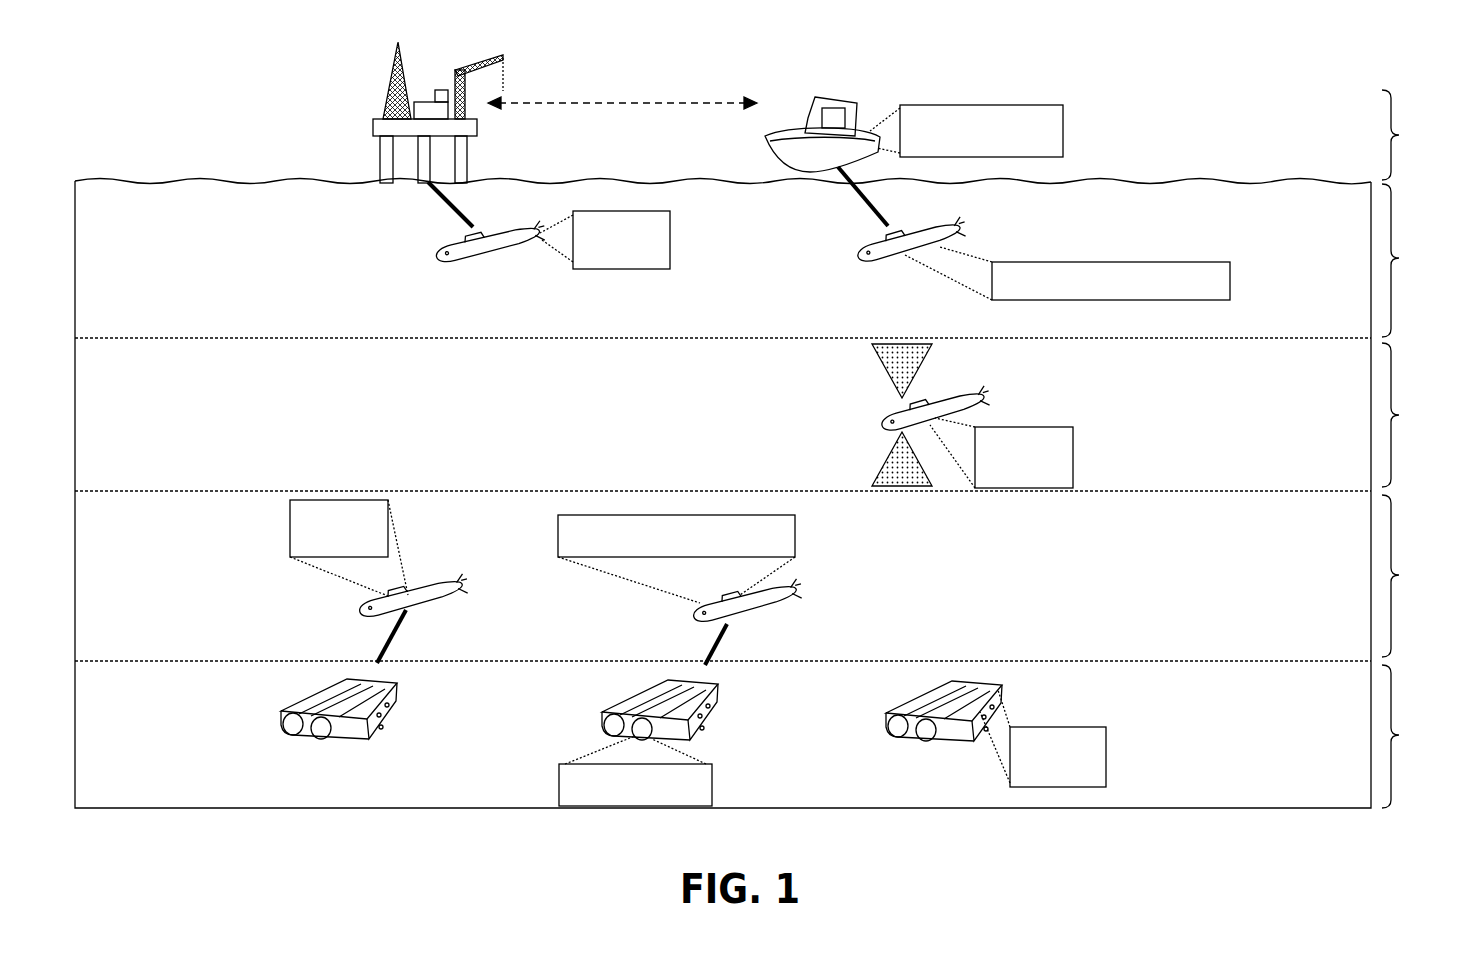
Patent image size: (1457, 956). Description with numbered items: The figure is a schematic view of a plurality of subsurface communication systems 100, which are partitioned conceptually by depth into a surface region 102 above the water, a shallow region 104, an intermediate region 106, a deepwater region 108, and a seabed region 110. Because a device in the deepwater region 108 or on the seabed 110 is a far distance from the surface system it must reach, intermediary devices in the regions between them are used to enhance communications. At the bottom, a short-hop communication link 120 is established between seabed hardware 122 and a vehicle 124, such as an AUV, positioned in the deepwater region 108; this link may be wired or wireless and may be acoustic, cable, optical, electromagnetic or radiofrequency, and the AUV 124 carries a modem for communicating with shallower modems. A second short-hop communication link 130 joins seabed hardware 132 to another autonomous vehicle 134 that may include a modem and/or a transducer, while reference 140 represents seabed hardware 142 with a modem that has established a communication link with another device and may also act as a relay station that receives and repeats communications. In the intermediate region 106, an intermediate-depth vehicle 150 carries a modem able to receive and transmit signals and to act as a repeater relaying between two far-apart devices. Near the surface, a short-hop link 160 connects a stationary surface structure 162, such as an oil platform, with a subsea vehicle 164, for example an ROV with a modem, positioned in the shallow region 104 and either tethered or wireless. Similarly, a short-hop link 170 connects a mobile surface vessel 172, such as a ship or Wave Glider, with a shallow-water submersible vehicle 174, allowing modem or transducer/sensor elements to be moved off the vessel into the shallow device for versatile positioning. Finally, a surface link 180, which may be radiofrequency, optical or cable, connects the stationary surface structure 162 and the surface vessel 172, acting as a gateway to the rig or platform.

The subsurface communication systems 100 is at (984, 40).
The surface region 102 is at (1330, 135).
The shallow region 104 is at (1330, 260).
The intermediate region 106 is at (1330, 415).
The deepwater region 108 is at (1330, 576).
The seabed region 110 is at (1330, 736).
The short-hop communication link 120 is at (418, 680).
The seabed hardware 122 is at (282, 718).
The vehicle 124 is at (368, 605).
The short-hop communication link 130 is at (740, 692).
The seabed hardware 132 is at (598, 712).
The vehicle 134 is at (785, 583).
The seabed hardware communication link 140 is at (1025, 686).
The seabed hardware 142 is at (880, 716).
The intermediate-depth vehicle 150 is at (866, 410).
The short-hop link 160 is at (437, 293).
The stationary surface structure 162 is at (383, 97).
The subsea vehicle 164 is at (486, 258).
The short-hop link 170 is at (838, 268).
The mobile surface vessel 172 is at (845, 113).
The submersible vehicle 174 is at (940, 225).
The surface link 180 is at (680, 76).